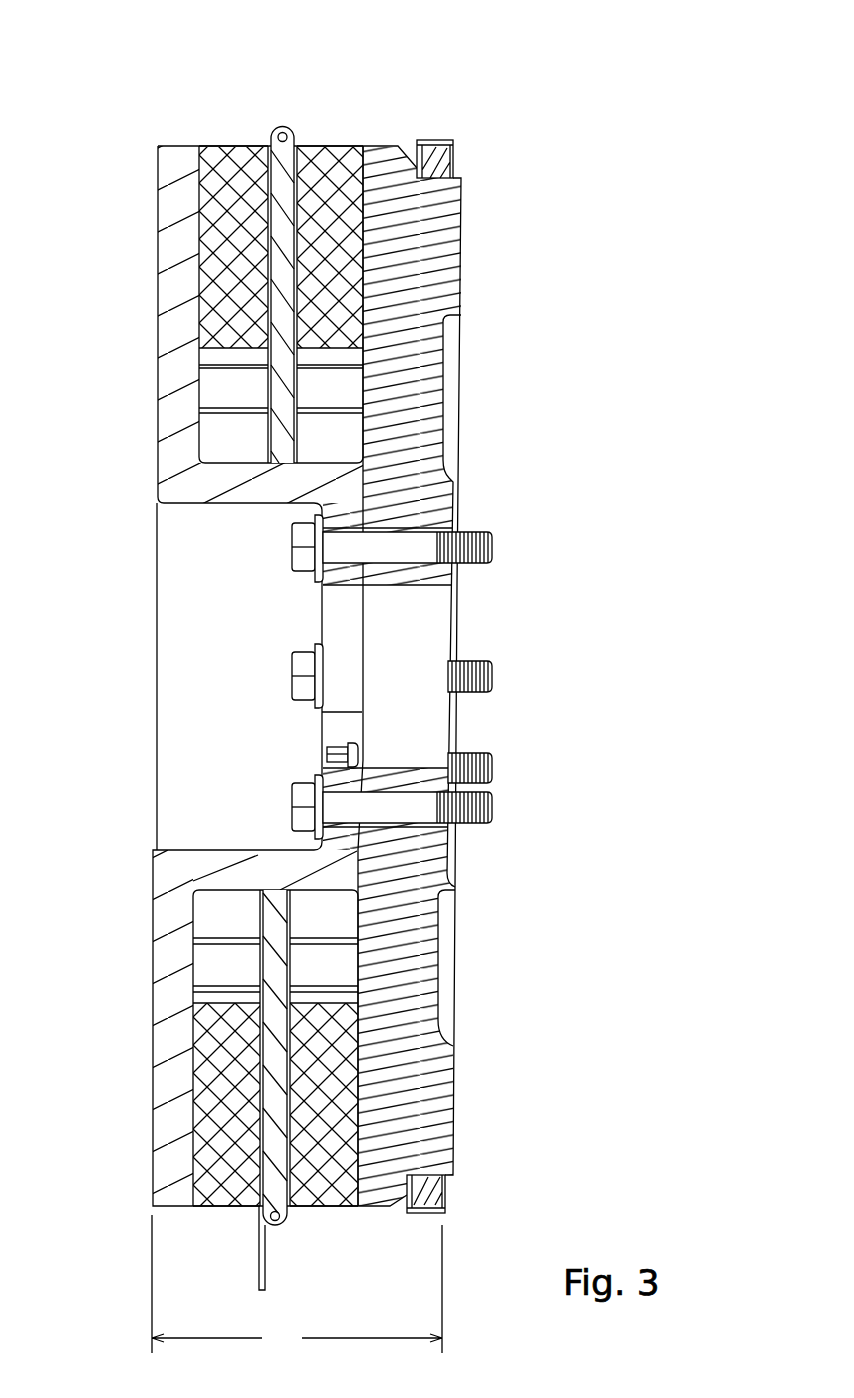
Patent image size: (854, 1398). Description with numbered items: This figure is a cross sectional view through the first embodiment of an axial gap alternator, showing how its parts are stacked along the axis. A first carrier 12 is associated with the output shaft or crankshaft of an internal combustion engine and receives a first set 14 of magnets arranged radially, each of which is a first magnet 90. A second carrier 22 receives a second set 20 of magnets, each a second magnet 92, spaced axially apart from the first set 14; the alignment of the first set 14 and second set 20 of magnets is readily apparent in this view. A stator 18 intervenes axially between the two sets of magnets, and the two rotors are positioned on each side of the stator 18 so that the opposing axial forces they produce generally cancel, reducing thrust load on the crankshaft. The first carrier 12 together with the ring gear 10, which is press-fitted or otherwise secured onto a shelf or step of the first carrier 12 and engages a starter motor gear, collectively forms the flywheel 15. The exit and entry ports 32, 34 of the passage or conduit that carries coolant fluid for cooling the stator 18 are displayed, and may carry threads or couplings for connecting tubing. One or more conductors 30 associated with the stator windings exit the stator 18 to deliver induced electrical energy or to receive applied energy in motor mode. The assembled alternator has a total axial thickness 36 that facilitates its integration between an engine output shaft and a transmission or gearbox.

The ring gear 10 is at (448, 160).
The first carrier 12 is at (390, 146).
The first set of magnets 14 is at (347, 133).
The flywheel 15 is at (438, 140).
The stator 18 is at (274, 458).
The second set of magnets 20 is at (218, 133).
The second carrier 22 is at (158, 209).
The conductors 30 is at (260, 1286).
The exit port 32 is at (287, 127).
The entry port 34 is at (283, 1224).
The total axial thickness 36 is at (297, 1284).
The first magnet 90 is at (318, 146).
The second magnet 92 is at (230, 148).